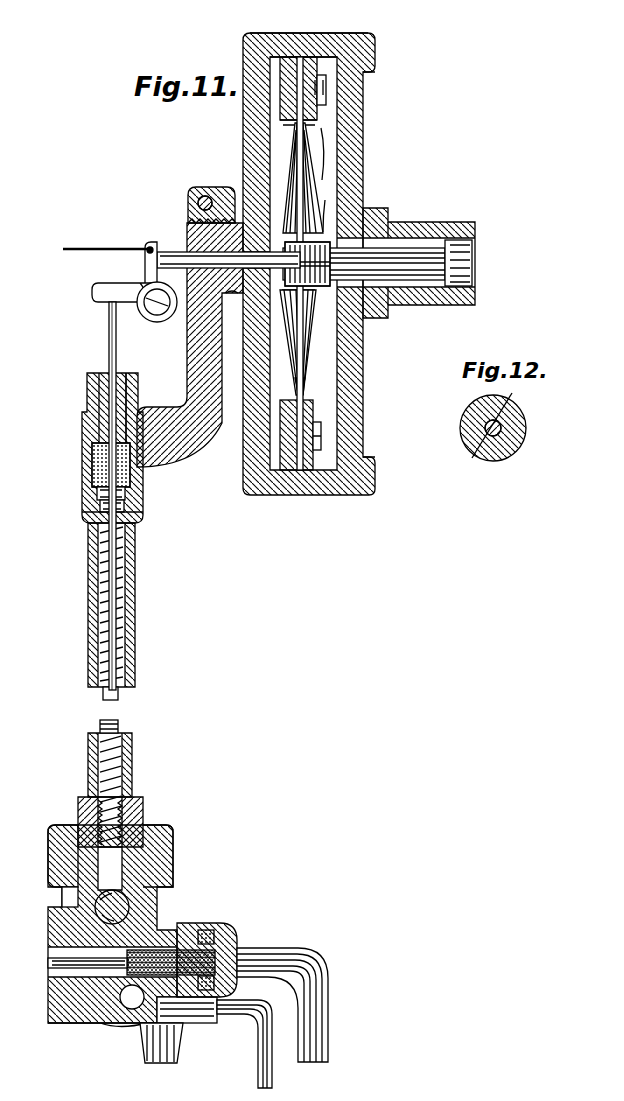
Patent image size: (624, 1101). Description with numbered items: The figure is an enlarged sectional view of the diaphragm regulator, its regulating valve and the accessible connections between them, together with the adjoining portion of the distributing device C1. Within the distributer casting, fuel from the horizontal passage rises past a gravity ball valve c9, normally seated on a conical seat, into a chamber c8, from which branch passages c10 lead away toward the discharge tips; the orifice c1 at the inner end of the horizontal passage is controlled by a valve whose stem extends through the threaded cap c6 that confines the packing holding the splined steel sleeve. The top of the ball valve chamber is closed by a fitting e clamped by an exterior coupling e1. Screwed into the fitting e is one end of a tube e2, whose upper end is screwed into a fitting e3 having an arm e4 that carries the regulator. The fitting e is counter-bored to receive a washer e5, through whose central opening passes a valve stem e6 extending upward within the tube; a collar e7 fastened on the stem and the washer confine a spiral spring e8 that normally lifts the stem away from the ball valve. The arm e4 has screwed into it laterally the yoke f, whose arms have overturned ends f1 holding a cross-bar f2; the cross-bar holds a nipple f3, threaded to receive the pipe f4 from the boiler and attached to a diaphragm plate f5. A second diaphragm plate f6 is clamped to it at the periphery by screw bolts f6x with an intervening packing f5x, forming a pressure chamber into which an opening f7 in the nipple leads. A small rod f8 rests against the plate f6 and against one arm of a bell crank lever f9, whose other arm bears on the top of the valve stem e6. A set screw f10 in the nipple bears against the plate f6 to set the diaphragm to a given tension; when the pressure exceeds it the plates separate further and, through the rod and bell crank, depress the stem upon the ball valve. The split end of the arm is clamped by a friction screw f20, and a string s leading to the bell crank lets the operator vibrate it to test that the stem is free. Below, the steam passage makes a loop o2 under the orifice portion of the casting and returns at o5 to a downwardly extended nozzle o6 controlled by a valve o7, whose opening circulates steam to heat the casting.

In FIG. 11, the yoke f is at (309, 58).
In FIG. 11, the packing f5x is at (334, 44).
In FIG. 11, the overturned ends of yoke arms f1 is at (372, 70).
In FIG. 11, the cross-bar f2 is at (358, 167).
In FIG. 11, the nipple f3 is at (412, 227).
In FIG. 12, the nipple f3 is at (527, 433).
In FIG. 11, the pipe f4 is at (472, 262).
In FIG. 11, the diaphragm plate f5 is at (323, 147).
In FIG. 11, the second diaphragm plate f6 is at (285, 157).
In FIG. 11, the screw bolts f6x is at (322, 436).
In FIG. 11, the opening f7 is at (323, 232).
In FIG. 12, the opening f7 is at (514, 395).
In FIG. 11, the rod f8 is at (178, 250).
In FIG. 11, the bell crank lever f9 is at (142, 252).
In FIG. 11, the set screw f10 is at (333, 262).
In FIG. 12, the set screw f10 is at (478, 456).
In FIG. 11, the friction screw f20 is at (200, 202).
In FIG. 11, the string s is at (108, 240).
In FIG. 11, the fitting e is at (83, 808).
In FIG. 11, the exterior coupling e1 is at (153, 830).
In FIG. 11, the tube e2 is at (124, 615).
In FIG. 11, the fitting e3 is at (142, 520).
In FIG. 11, the arm e4 is at (187, 362).
In FIG. 11, the washer e5 is at (53, 837).
In FIG. 11, the valve stem e6 is at (110, 753).
In FIG. 11, the collar e7 is at (124, 495).
In FIG. 11, the spiral spring e8 is at (118, 647).
In FIG. 11, the orifice c1 is at (50, 1024).
In FIG. 11, the distributing device C1 is at (125, 924).
In FIG. 11, the threaded cap c6 is at (252, 980).
In FIG. 11, the chamber c8 is at (83, 892).
In FIG. 11, the gravity ball valve c9 is at (94, 495).
In FIG. 11, the branch passages c10 is at (92, 458).
In FIG. 11, the loop o2 is at (83, 1008).
In FIG. 11, the return passage o5 is at (127, 1005).
In FIG. 11, the nozzle o6 is at (174, 1062).
In FIG. 11, the valve o7 is at (267, 1080).